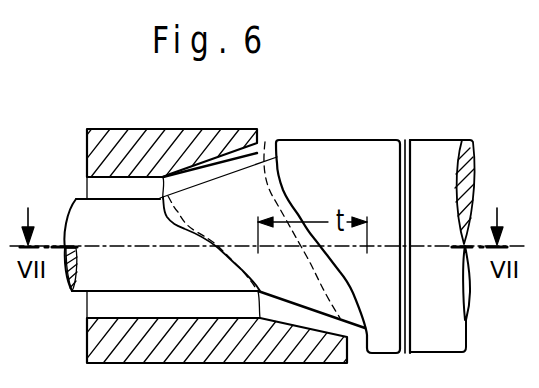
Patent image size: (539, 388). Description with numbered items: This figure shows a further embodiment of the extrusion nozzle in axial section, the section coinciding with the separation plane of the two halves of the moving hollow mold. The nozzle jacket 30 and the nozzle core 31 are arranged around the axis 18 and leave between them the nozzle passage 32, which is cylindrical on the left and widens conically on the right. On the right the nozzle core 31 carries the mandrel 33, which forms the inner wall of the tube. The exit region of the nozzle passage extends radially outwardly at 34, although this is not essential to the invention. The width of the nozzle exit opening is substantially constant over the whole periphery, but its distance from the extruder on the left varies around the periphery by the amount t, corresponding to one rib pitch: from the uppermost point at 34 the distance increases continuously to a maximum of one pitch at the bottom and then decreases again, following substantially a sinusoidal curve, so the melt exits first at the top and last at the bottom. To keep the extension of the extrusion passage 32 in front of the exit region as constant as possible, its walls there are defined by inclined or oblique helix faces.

The axis 18 is at (166, 243).
The nozzle jacket 30 is at (172, 137).
The nozzle core 31 is at (61, 213).
The nozzle passage 32 is at (197, 327).
The mandrel 33 is at (375, 214).
The exit region of the nozzle passage 34 is at (250, 197).